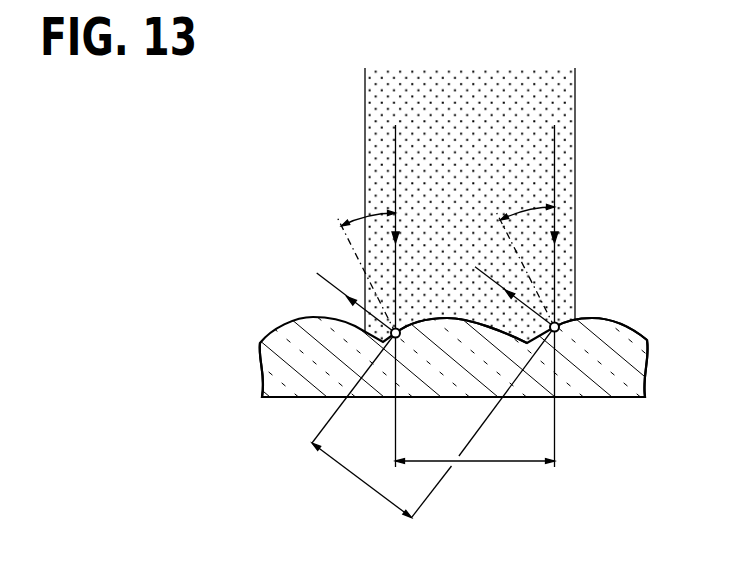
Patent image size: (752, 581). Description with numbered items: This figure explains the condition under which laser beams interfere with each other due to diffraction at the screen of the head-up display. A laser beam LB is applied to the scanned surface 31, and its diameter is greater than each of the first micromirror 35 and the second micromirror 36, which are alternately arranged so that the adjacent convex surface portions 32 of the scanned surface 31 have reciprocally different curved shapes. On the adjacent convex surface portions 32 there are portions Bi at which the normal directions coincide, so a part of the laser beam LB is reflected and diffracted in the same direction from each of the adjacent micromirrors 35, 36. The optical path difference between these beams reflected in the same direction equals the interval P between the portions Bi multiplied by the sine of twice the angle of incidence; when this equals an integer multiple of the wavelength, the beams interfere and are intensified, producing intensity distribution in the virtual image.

The laser beam LB is at (573, 147).
The scanned surface 31 is at (633, 330).
The convex surface portion 32 is at (465, 318).
The first micromirror 35 is at (275, 400).
The second micromirror 36 is at (423, 400).
The portion at which normal directions coincide Bi is at (399, 329).
The interval between portions Bi P is at (475, 449).